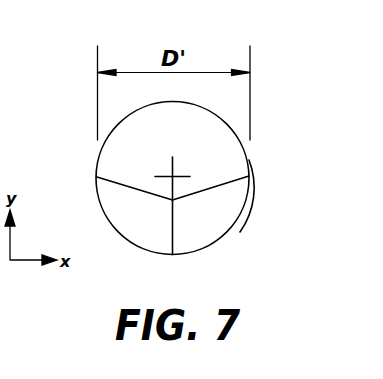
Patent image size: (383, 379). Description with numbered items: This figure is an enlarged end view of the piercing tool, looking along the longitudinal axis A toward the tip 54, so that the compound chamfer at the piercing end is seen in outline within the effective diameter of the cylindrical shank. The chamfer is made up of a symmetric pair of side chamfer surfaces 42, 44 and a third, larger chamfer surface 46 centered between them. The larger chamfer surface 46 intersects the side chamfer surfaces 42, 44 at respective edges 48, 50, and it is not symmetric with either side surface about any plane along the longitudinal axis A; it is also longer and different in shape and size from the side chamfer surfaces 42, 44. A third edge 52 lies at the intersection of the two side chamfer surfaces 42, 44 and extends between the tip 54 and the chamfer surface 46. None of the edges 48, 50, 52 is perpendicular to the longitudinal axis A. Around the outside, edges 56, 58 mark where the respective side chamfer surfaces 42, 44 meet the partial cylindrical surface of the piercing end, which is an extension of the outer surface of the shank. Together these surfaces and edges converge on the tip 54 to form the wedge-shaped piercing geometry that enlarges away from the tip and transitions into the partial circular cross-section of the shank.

The side chamfer surface 42 is at (153, 225).
The side chamfer surface 44 is at (215, 208).
The chamfer surface 46 is at (171, 126).
The edge 48 is at (130, 186).
The edge 50 is at (225, 182).
The third edge 52 is at (173, 224).
The tip 54 is at (172, 254).
The edge 56 is at (104, 217).
The edge 58 is at (248, 198).
The longitudinal axis A is at (173, 177).